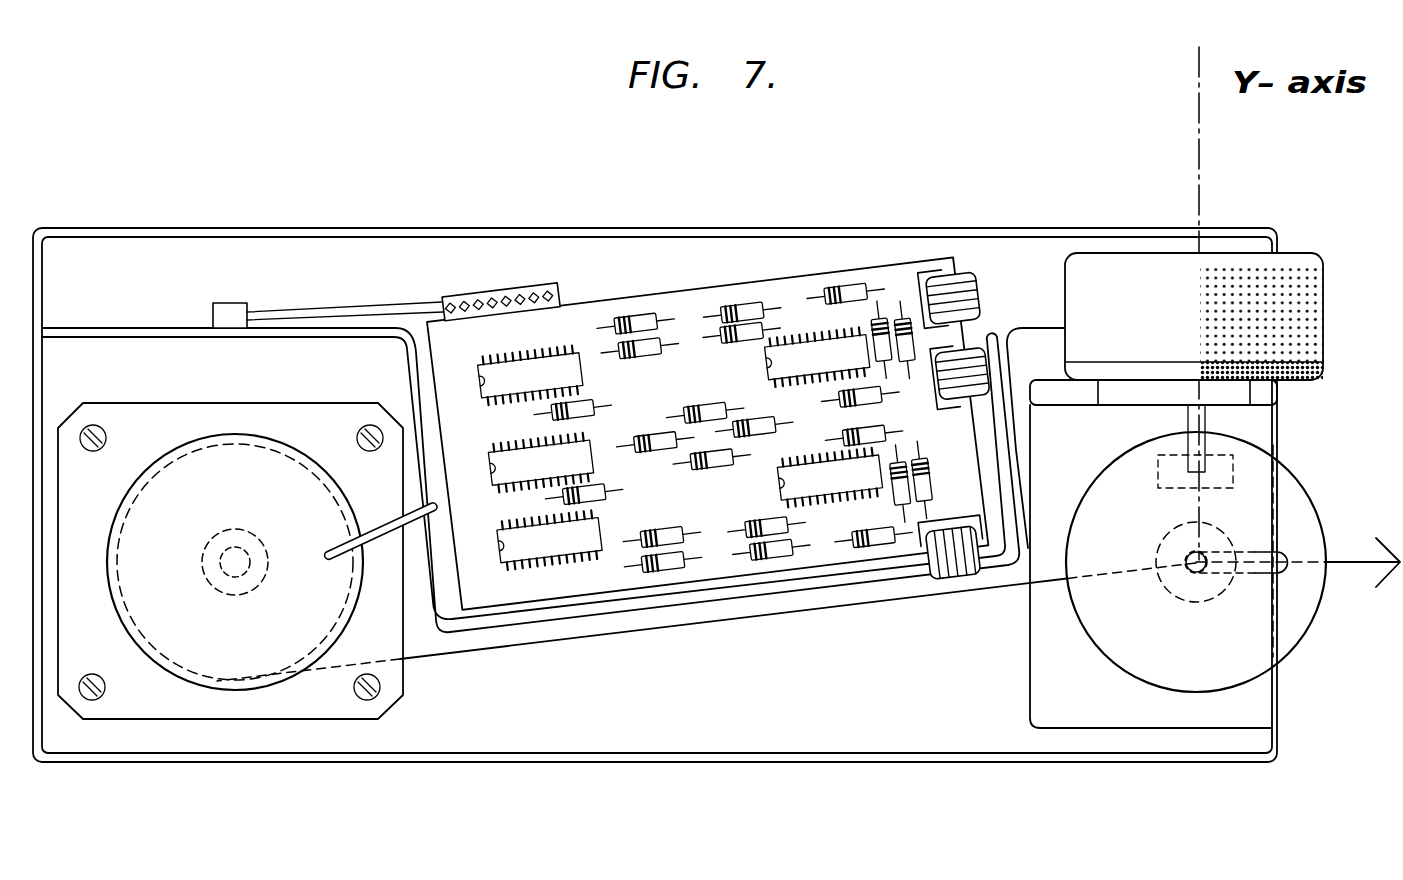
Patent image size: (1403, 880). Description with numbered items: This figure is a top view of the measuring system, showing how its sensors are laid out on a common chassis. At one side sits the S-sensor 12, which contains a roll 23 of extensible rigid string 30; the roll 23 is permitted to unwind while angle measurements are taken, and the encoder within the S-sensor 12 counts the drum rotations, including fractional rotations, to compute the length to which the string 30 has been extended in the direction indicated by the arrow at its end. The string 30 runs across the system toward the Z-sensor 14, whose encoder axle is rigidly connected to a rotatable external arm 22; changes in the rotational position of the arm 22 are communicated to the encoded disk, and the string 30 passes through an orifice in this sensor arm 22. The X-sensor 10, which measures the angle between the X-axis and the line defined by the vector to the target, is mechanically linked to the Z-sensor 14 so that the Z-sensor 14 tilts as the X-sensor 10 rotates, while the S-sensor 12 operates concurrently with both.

The X-sensor 10 is at (1120, 287).
The S-sensor 12 is at (240, 643).
The Z-sensor 14 is at (1253, 648).
The external arm 22 is at (1267, 548).
The roll 23 is at (243, 417).
The extensible rigid string 30 is at (835, 613).